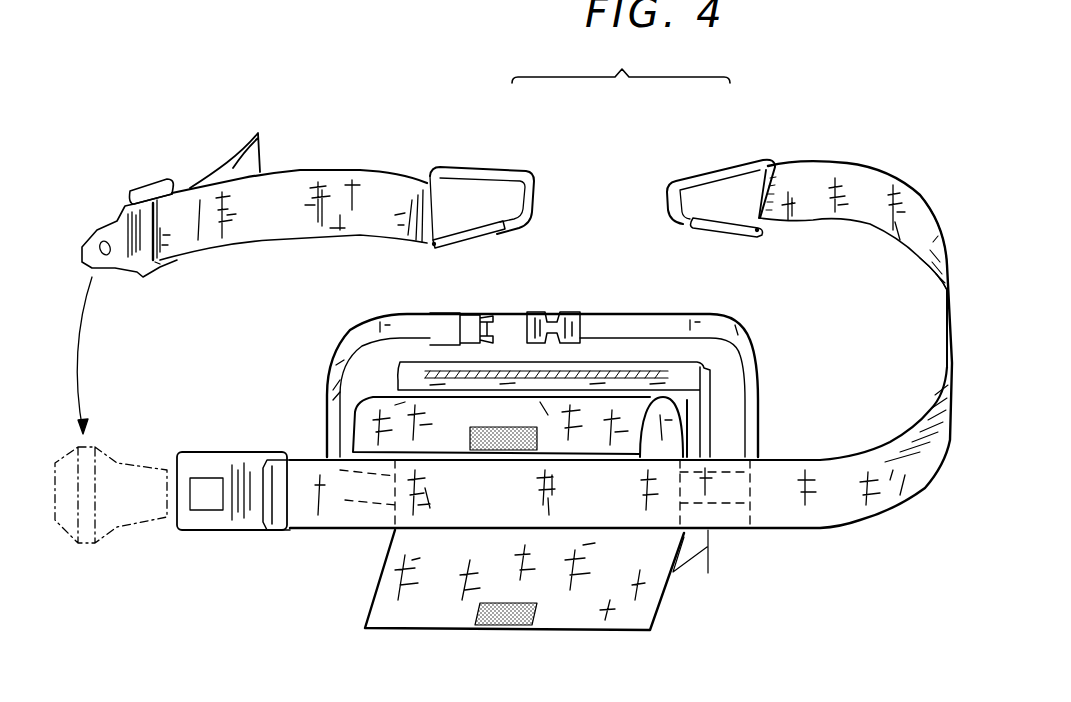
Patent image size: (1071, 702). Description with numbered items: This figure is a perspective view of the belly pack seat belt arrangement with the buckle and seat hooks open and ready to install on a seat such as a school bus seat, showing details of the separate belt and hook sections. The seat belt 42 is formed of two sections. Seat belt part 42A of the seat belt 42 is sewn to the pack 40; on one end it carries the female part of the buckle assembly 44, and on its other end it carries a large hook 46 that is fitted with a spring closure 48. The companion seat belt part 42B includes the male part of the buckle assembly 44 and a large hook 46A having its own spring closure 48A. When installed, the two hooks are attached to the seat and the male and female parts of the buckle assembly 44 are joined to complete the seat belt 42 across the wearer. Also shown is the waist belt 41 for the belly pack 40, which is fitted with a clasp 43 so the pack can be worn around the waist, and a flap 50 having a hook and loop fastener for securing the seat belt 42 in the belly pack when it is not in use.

The pack 40 is at (690, 547).
The waist belt 41 is at (710, 318).
The seat belt 42 is at (817, 517).
The seat belt part 42A is at (858, 455).
The seat belt part 42B is at (333, 233).
The clasp 43 is at (478, 303).
The buckle assembly 44 is at (210, 545).
The large hook 46 is at (690, 180).
The large hook 46A is at (537, 187).
The spring closure 48 is at (733, 233).
The spring closure 48A is at (477, 233).
The flap 50 is at (385, 592).